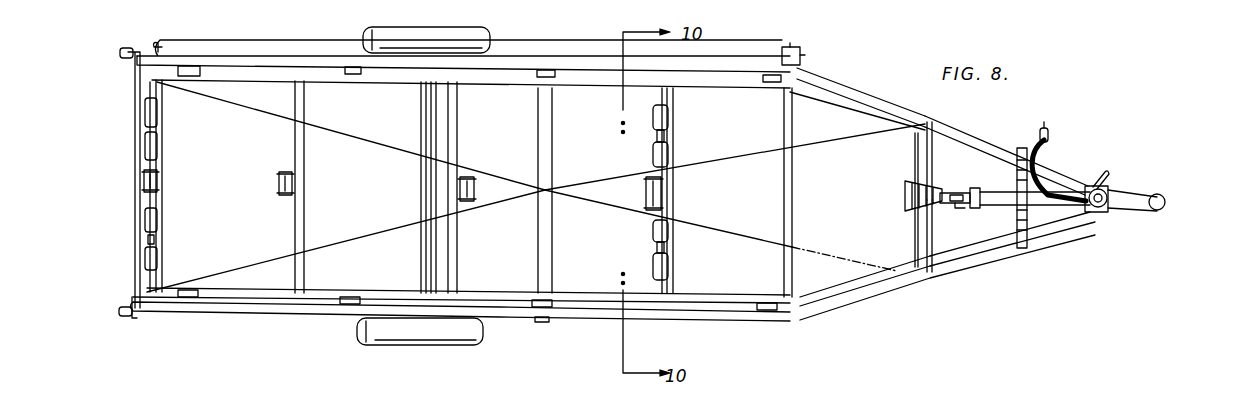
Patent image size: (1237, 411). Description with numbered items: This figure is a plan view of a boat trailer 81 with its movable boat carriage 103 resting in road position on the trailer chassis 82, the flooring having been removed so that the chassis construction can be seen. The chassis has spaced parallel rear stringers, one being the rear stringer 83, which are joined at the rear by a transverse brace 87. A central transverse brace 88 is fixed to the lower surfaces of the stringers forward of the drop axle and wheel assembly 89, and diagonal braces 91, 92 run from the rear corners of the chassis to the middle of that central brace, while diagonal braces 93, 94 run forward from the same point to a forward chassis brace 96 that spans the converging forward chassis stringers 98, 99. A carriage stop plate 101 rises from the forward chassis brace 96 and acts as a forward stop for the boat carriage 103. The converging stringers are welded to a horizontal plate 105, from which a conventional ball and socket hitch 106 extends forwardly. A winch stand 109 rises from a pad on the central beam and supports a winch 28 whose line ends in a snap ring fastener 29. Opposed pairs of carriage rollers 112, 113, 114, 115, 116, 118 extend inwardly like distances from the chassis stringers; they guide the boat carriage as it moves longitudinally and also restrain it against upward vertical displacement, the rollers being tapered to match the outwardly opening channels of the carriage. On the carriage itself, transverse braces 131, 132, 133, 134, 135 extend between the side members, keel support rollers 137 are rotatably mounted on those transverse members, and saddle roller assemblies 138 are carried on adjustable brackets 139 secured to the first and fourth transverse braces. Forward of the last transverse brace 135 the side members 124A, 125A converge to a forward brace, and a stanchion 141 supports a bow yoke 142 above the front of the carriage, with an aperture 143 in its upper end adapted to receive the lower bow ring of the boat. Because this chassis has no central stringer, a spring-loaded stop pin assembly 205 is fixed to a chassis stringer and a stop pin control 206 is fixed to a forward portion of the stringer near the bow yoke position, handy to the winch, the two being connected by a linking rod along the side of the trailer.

The winch 28 is at (1100, 178).
The snap ring fastener 29 is at (1048, 134).
The trailer 81 is at (1049, 245).
The trailer chassis 82 is at (284, 306).
The rear stringer 83 is at (703, 314).
The transverse brace 87 is at (135, 252).
The central transverse brace 88 is at (542, 323).
The drop axle and wheel assembly 89 is at (418, 188).
The diagonal brace 91 is at (358, 241).
The diagonal brace 92 is at (356, 133).
The diagonal brace 93 is at (740, 228).
The diagonal brace 94 is at (743, 156).
The forward chassis brace 96 is at (930, 124).
The forward chassis stringer 98 is at (946, 270).
The forward chassis stringer 99 is at (967, 136).
The carriage stop plate 101 is at (933, 238).
The boat carriage 103 is at (836, 100).
The horizontal plate 105 is at (1110, 212).
The ball and socket hitch 106 is at (1164, 197).
The winch stand 109 is at (1007, 202).
The carriage roller 112 is at (190, 66).
The carriage roller 113 is at (348, 305).
The carriage roller 114 is at (350, 65).
The carriage roller 115 is at (534, 307).
The carriage roller 116 is at (556, 78).
The carriage roller 118 is at (768, 82).
The side member 124A is at (868, 298).
The side member 125A is at (863, 112).
The transverse brace 131 is at (163, 187).
The transverse brace 132 is at (295, 217).
The transverse brace 133 is at (457, 248).
The transverse brace 134 is at (675, 262).
The transverse brace 135 is at (793, 203).
The keel support roller 137 is at (143, 181).
The saddle roller assembly 138 is at (675, 136).
The adjustable bracket 139 is at (915, 162).
The stanchion 141 is at (950, 190).
The bow yoke 142 is at (905, 211).
The aperture 143 is at (960, 206).
The spring-loaded stop pin assembly 205 is at (158, 42).
The stop pin control 206 is at (805, 55).